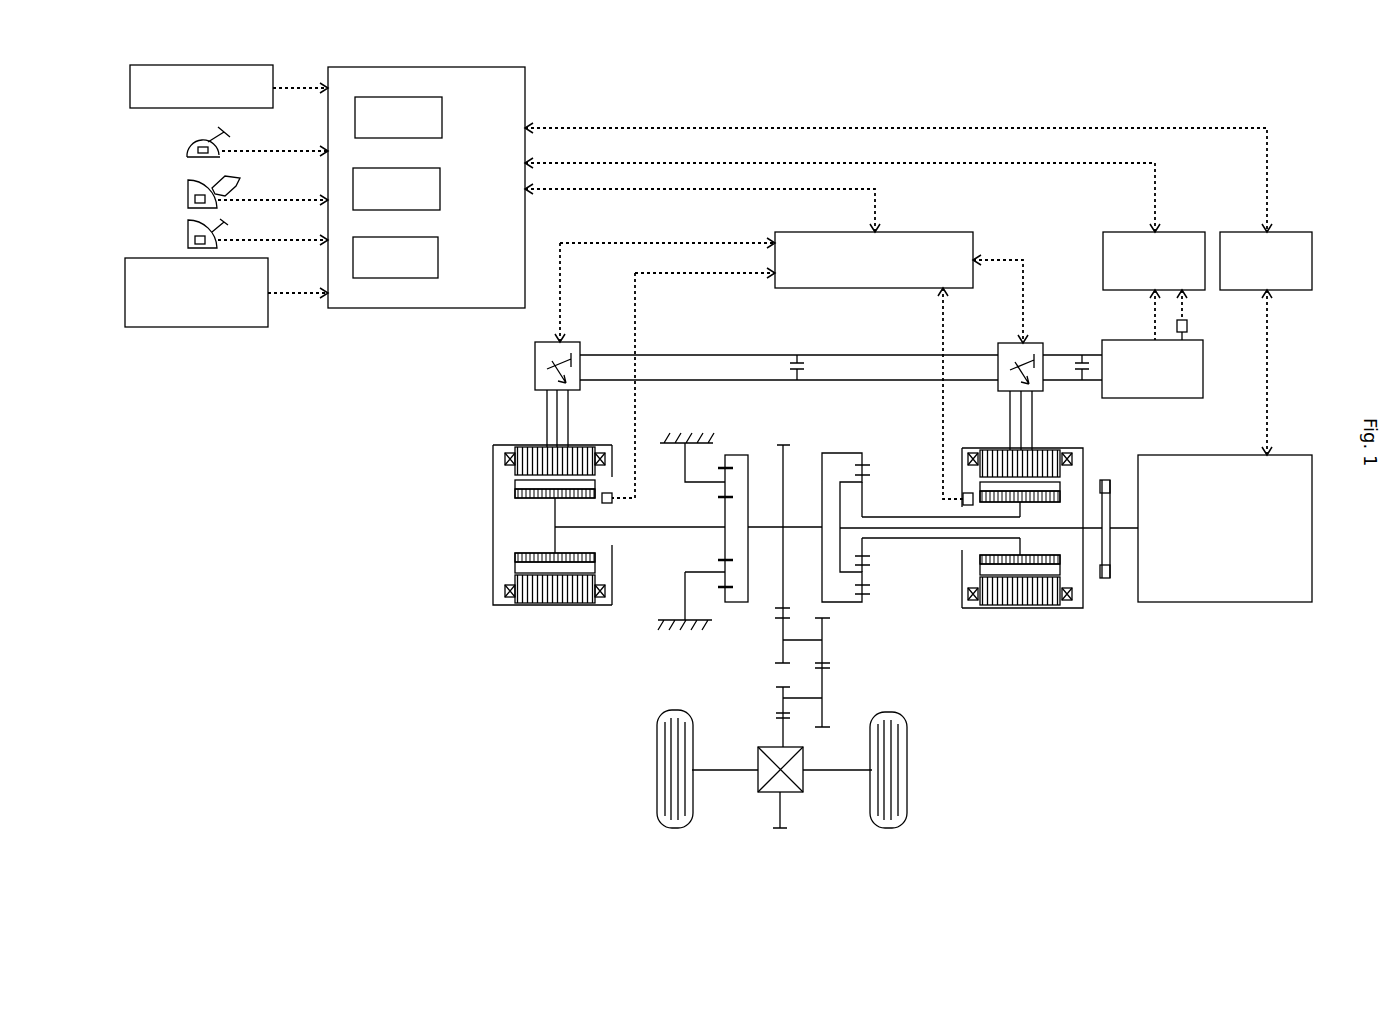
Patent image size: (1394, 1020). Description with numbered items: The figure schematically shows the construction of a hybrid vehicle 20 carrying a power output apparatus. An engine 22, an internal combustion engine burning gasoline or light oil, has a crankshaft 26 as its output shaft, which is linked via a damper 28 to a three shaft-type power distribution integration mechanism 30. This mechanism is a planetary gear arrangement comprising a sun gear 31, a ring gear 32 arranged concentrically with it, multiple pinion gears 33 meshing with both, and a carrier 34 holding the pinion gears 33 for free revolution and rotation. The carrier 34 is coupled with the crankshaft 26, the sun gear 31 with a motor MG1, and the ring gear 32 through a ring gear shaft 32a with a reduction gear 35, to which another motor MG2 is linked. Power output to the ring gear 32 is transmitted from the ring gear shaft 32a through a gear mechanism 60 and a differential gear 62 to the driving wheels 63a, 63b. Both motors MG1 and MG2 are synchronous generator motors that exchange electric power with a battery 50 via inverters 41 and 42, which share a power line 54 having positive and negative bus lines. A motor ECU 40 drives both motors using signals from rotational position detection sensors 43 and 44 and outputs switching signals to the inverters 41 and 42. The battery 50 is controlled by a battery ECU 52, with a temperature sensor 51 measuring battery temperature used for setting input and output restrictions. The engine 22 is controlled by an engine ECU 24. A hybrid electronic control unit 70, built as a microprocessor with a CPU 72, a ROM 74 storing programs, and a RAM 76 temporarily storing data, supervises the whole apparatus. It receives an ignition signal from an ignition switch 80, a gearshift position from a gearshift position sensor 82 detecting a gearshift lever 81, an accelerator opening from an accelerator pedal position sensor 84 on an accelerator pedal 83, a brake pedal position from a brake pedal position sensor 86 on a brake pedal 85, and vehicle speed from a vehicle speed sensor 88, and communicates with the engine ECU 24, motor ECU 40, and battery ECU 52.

The hybrid vehicle 20 is at (1069, 99).
The engine 22 is at (1220, 602).
The engine ECU 24 is at (1285, 232).
The crankshaft 26 is at (1120, 533).
The damper 28 is at (1107, 582).
The power distribution integration mechanism 30 is at (880, 436).
The sun gear 31 is at (862, 543).
The ring gear 32 is at (865, 593).
The ring gear shaft 32a is at (767, 527).
The pinion gears 33 is at (865, 570).
The carrier 34 is at (832, 493).
The reduction gear 35 is at (739, 427).
The motor ECU 40 is at (915, 232).
The inverter 41 is at (1040, 343).
The inverter 42 is at (568, 342).
The rotational position detection sensor 43 is at (965, 493).
The rotational position detection sensor 44 is at (611, 493).
The battery 50 is at (1150, 398).
The temperature sensor 51 is at (1190, 325).
The battery ECU 52 is at (1133, 232).
The power line 54 is at (853, 377).
The gear mechanism 60 is at (874, 684).
The differential gear 62 is at (805, 783).
The driving wheel 63a is at (657, 802).
The driving wheel 63b is at (908, 805).
The hybrid electronic control unit 70 is at (427, 67).
The CPU 72 is at (442, 117).
The ROM 74 is at (440, 188).
The RAM 76 is at (438, 258).
The ignition switch 80 is at (130, 82).
The gearshift lever 81 is at (212, 137).
The gearshift position sensor 82 is at (190, 150).
The accelerator pedal 83 is at (215, 182).
The accelerator pedal position sensor 84 is at (190, 200).
The brake pedal 85 is at (210, 226).
The brake pedal position sensor 86 is at (190, 244).
The vehicle speed sensor 88 is at (125, 290).
The motor MG1 is at (1048, 608).
The motor MG2 is at (530, 445).